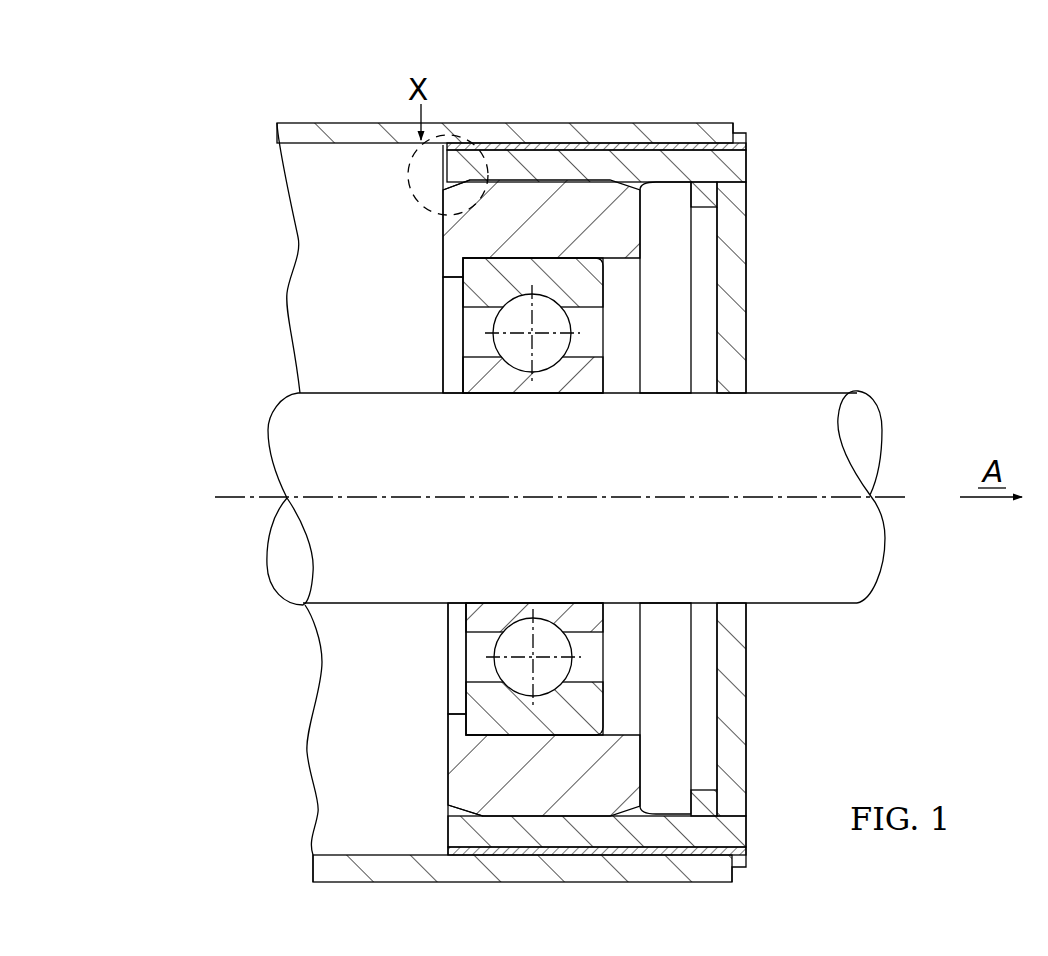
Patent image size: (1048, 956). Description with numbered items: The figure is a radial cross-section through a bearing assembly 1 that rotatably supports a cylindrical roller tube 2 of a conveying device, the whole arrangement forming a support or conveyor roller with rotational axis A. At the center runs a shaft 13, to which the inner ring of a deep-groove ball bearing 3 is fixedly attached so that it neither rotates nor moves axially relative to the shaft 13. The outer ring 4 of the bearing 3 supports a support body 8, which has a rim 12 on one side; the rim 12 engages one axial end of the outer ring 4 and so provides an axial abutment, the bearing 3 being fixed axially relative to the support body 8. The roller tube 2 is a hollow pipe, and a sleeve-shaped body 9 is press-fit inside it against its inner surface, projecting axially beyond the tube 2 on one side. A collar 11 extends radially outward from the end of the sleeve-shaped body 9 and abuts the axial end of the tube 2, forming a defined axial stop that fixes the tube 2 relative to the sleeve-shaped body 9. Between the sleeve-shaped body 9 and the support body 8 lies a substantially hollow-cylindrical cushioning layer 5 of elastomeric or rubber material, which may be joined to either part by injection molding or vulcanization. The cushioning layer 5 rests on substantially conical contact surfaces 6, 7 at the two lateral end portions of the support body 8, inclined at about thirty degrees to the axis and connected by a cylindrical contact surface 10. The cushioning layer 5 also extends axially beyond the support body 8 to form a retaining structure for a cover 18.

The bearing assembly 1 is at (920, 282).
The cylindrical roller tube 2 is at (323, 138).
The deep-groove ball bearing 3 is at (420, 345).
The outer ring 4 is at (487, 287).
The cushioning layer 5 is at (612, 170).
The contact surface 6 is at (462, 180).
The contact surface 7 is at (629, 182).
The support body 8 is at (487, 237).
The sleeve-shaped body 9 is at (546, 145).
The cylindrical contact surface 10 is at (558, 177).
The collar 11 is at (746, 133).
The rim 12 is at (465, 270).
The shaft 13 is at (305, 433).
The cover 18 is at (738, 259).